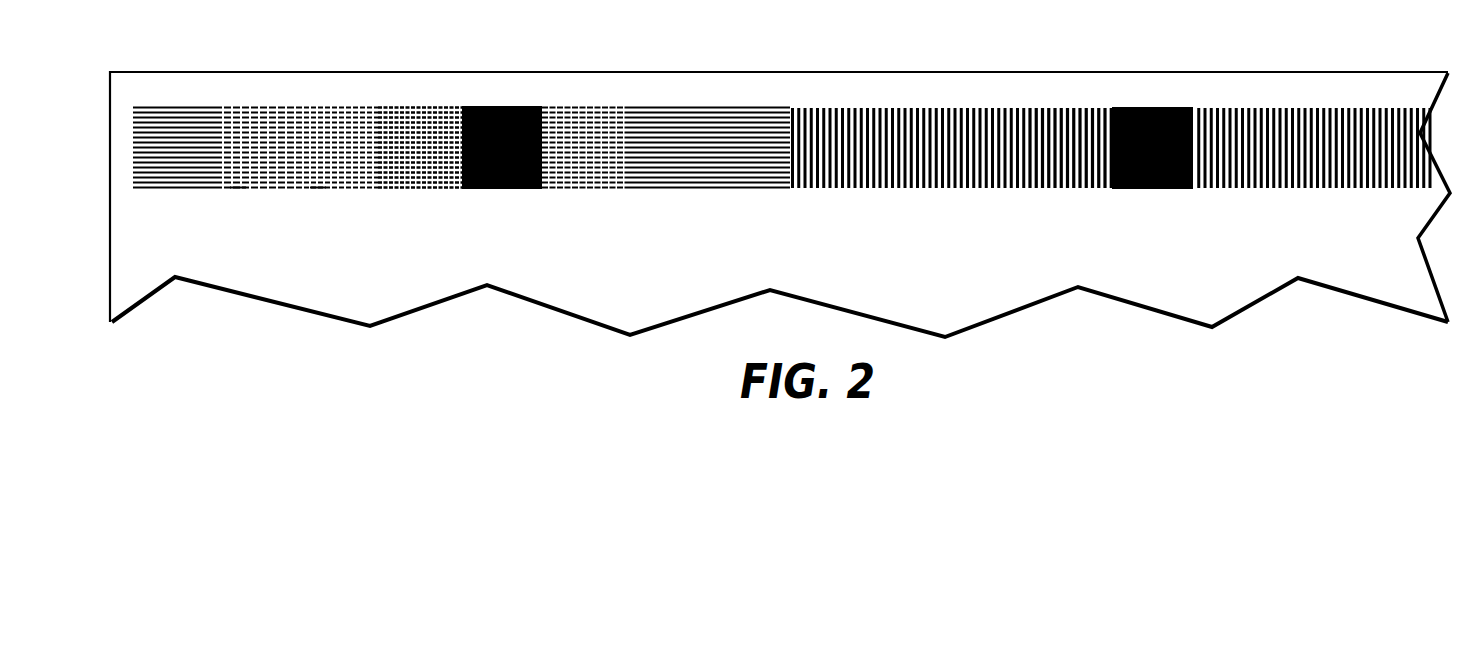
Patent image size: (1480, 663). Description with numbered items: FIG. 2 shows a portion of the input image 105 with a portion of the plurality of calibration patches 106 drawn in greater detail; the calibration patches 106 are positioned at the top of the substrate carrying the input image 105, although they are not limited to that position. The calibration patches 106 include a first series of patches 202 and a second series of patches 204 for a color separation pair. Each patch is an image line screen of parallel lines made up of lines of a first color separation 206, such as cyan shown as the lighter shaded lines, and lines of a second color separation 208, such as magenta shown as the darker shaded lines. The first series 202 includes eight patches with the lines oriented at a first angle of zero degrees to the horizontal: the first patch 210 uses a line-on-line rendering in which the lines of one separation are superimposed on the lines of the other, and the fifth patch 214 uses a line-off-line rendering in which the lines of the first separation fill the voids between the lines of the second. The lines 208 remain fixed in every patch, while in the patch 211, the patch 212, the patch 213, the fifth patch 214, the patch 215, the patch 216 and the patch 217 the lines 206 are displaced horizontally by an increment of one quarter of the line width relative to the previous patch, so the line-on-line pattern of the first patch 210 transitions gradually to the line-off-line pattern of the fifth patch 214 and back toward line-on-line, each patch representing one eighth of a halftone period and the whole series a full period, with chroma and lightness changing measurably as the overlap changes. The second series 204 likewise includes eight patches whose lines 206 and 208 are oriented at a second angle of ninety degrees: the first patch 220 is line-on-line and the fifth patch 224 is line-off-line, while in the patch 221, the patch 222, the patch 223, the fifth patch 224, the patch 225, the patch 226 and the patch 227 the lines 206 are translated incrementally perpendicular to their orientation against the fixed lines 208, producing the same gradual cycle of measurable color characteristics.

The input image 105 is at (358, 303).
The calibration patches 106 is at (1438, 63).
The first series of patches 202 is at (787, 227).
The second series of patches 204 is at (1437, 228).
The lines of a first color separation 206 is at (238, 188).
The lines of a second color separation 208 is at (318, 188).
The first patch 210 is at (152, 108).
The patch 211 is at (232, 108).
The patch 212 is at (317, 108).
The patch 213 is at (398, 108).
The fifth patch 214 is at (485, 108).
The patch 215 is at (565, 108).
The patch 216 is at (645, 108).
The patch 217 is at (727, 108).
The first patch 220 is at (810, 108).
The patch 221 is at (885, 108).
The patch 222 is at (978, 108).
The patch 223 is at (1060, 108).
The fifth patch 224 is at (1138, 108).
The patch 225 is at (1228, 108).
The patch 226 is at (1310, 108).
The patch 227 is at (1380, 108).